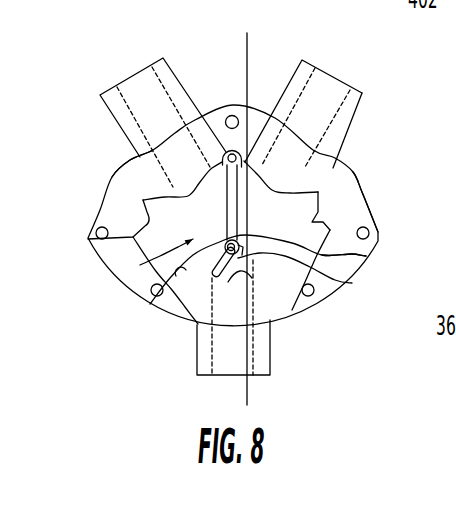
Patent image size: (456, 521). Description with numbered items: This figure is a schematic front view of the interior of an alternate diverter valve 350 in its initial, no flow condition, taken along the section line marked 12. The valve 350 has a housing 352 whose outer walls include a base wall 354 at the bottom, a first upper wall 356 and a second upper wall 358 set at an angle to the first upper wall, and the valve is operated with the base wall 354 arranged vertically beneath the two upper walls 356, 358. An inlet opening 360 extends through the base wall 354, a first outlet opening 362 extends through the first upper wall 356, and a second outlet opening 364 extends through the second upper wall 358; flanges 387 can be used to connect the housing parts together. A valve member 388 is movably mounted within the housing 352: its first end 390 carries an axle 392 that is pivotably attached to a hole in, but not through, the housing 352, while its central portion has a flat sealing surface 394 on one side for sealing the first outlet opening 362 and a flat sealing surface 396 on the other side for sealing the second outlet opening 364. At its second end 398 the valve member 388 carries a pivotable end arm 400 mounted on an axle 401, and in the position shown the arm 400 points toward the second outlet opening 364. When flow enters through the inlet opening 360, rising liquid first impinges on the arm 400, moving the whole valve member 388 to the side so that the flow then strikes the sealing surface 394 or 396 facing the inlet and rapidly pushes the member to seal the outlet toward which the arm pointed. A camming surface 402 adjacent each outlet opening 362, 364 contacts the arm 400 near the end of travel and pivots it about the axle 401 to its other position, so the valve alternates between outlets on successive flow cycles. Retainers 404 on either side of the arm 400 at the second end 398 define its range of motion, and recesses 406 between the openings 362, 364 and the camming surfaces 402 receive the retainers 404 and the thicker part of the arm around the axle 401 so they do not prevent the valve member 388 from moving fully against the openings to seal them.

The section line 12- 12 is at (247, 403).
The diverter valve 350 is at (390, 150).
The housing 352 is at (342, 228).
The base wall 354 is at (150, 308).
The first upper wall 356 is at (260, 125).
The second upper wall 358 is at (213, 113).
The inlet opening 360 is at (253, 272).
The first outlet opening 362 is at (342, 168).
The second outlet opening 364 is at (143, 200).
The flanges 387 is at (362, 193).
The valve member 388 is at (140, 265).
The first end 390 is at (140, 157).
The axle 392 is at (243, 108).
The flat sealing surface 394 is at (250, 226).
The flat sealing surface 396 is at (222, 207).
The second end 398 is at (366, 256).
The pivotable end arm 400 is at (314, 292).
The axle 401 is at (148, 291).
The camming surface 402 is at (88, 236).
The retainers 404 is at (352, 283).
The recesses 406 is at (138, 188).